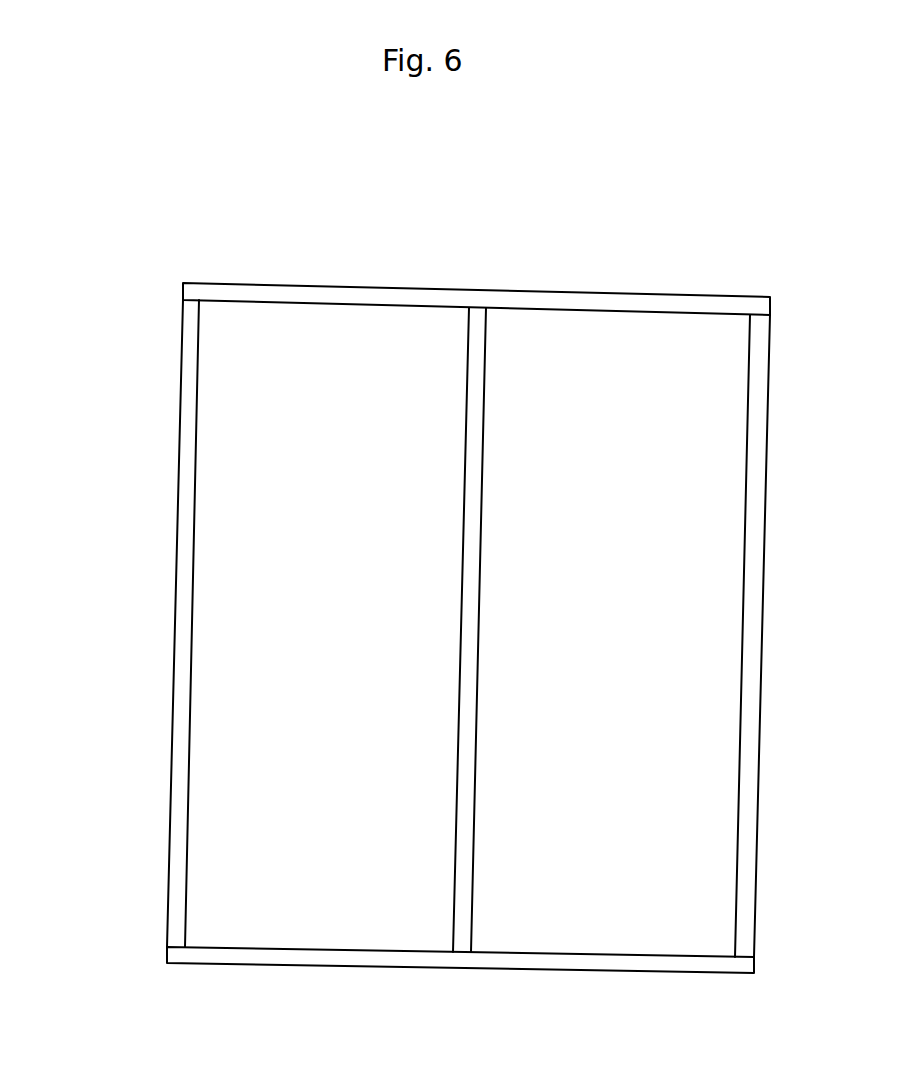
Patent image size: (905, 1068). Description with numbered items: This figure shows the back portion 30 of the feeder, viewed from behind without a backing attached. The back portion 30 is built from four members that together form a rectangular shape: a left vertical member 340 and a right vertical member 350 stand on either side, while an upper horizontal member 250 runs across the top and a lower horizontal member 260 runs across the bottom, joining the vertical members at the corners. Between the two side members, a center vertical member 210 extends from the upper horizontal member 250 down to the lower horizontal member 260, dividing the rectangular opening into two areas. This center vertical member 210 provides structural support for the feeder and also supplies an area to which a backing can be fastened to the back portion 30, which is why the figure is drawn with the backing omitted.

The back portion 30 is at (710, 162).
The upper horizontal member 250 is at (307, 285).
The lower horizontal member 260 is at (348, 967).
The left vertical member 340 is at (178, 467).
The right vertical member 350 is at (766, 492).
The center vertical member 210 is at (479, 598).